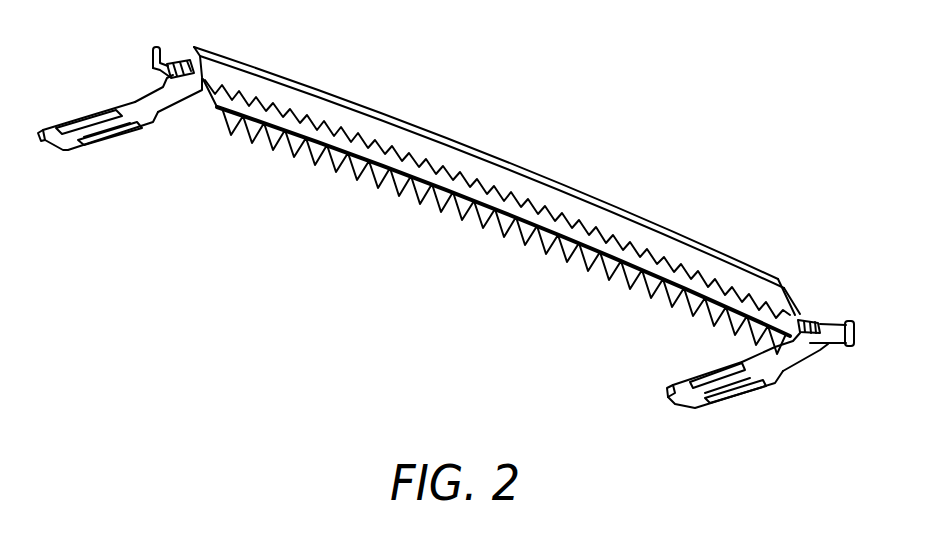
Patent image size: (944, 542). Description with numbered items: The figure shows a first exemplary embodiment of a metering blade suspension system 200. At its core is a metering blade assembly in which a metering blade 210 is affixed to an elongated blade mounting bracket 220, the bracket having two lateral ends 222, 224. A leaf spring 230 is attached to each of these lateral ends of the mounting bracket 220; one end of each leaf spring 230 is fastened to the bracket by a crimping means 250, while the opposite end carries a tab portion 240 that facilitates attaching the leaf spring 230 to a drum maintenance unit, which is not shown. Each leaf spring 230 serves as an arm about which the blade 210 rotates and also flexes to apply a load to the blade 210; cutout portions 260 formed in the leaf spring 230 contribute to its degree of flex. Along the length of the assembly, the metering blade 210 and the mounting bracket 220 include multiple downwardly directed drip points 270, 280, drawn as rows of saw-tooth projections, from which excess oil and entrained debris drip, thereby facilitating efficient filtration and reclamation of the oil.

The metering blade suspension system 200 is at (368, 227).
The metering blade 210 is at (597, 203).
The elongated blade mounting bracket 220 is at (800, 314).
The lateral end 222 is at (152, 67).
The lateral end 224 is at (853, 341).
The leaf spring 230 is at (123, 107).
The tab portion 240 is at (60, 151).
The crimping means 250 is at (828, 322).
The cutout portions 260 is at (740, 393).
The drip points 270 is at (640, 290).
The drip points 280 is at (560, 214).